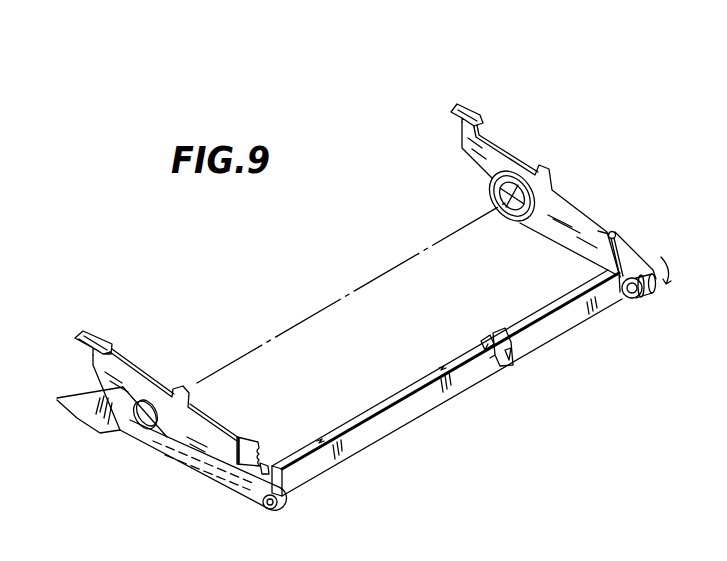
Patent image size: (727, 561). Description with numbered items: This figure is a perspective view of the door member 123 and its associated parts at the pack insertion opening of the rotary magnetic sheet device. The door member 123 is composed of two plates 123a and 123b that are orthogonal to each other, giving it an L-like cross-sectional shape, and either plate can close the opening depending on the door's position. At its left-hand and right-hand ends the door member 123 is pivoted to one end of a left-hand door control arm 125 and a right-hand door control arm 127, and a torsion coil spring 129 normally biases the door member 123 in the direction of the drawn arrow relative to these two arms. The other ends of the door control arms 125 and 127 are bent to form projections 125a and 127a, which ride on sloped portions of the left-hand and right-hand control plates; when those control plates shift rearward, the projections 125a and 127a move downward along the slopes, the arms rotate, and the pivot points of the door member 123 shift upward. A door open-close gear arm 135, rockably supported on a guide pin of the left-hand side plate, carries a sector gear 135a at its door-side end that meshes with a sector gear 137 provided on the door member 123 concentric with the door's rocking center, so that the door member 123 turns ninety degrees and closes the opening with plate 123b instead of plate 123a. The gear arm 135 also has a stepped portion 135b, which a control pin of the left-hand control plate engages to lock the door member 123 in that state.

The door member 123 is at (433, 398).
The plate 123a is at (511, 346).
The plate 123b is at (494, 356).
The left-hand door control arm 125 is at (229, 481).
The projection 125a is at (78, 338).
The right-hand door control arm 127 is at (564, 214).
The projection 127a is at (461, 106).
The torsion coil spring 129 is at (637, 247).
The door open-close gear arm 135 is at (118, 429).
The sector gear 135a is at (242, 435).
The stepped portion 135b is at (57, 401).
The sector gear 137 is at (267, 466).